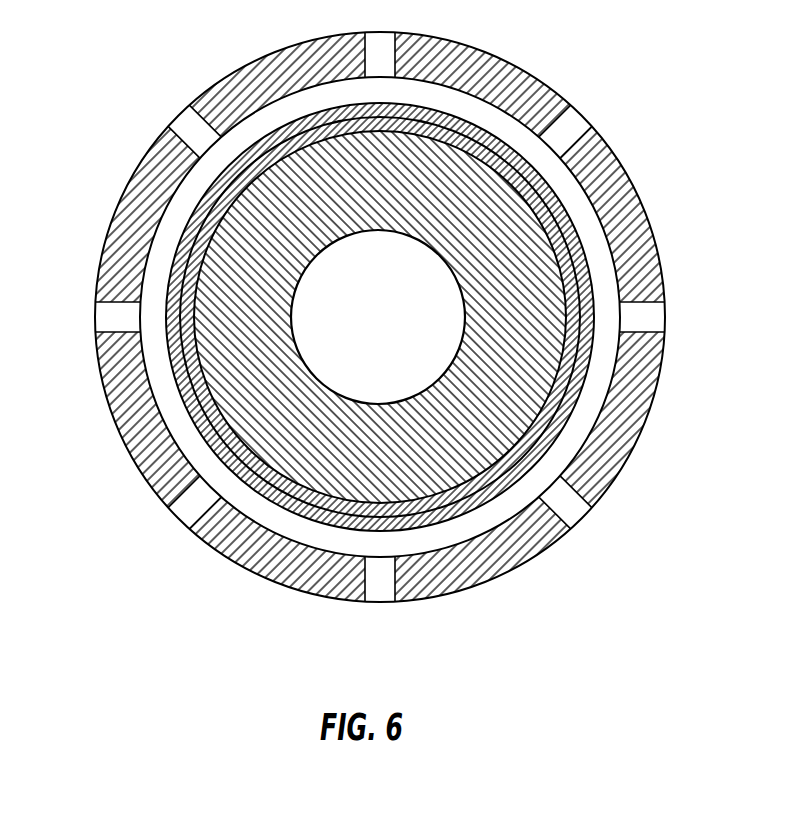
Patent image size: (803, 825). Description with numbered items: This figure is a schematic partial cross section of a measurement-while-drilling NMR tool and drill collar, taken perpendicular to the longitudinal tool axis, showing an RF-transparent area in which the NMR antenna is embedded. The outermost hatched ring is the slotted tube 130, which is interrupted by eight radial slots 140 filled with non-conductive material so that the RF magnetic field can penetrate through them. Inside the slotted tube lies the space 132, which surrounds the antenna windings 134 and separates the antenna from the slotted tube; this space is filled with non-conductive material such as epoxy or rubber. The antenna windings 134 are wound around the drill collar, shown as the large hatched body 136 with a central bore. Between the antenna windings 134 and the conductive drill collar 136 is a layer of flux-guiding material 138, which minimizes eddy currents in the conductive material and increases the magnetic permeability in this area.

The outer housing ring 130 is at (503, 75).
The space 132 is at (573, 193).
The antenna windings 134 is at (578, 393).
The core body 136 is at (315, 467).
The flux-guiding material 138 is at (187, 277).
The slots 140 is at (183, 120).